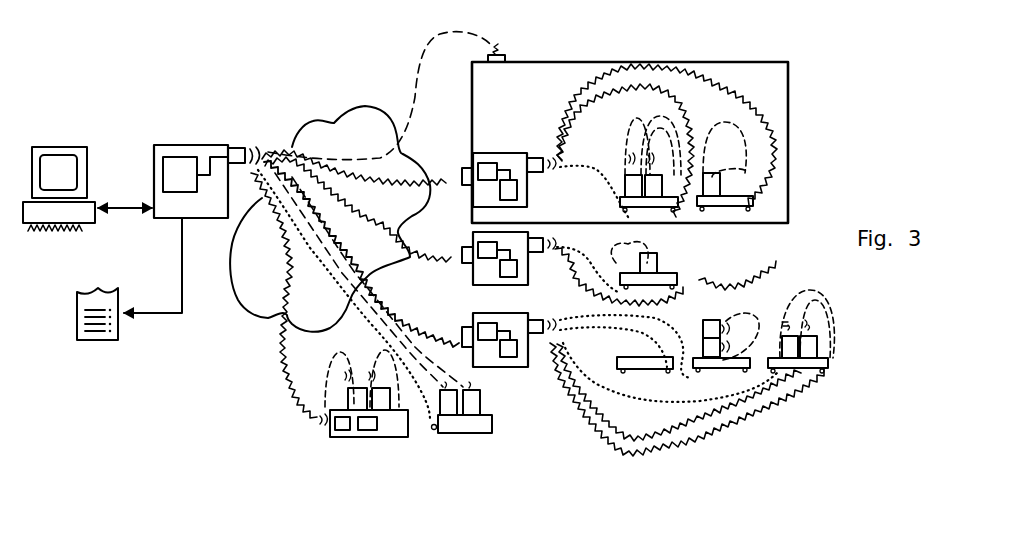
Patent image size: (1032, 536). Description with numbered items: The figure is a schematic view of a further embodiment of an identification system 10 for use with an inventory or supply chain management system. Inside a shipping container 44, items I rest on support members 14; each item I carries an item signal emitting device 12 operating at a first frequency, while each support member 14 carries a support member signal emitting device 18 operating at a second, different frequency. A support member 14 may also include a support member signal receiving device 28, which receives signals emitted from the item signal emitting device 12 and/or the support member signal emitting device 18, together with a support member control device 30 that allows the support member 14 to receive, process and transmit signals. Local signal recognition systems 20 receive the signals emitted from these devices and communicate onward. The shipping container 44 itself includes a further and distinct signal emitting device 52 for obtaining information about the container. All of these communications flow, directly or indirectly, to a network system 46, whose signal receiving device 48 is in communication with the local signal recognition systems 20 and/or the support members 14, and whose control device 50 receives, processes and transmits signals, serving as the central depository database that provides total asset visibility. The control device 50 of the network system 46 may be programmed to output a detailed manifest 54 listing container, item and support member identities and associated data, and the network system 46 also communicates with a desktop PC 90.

The identification system 10 is at (222, 373).
The item signal emitting device 12 is at (712, 176).
The item I is at (722, 186).
The support member 14 is at (733, 206).
The support member signal emitting device 18 is at (878, 344).
The local signal recognition system 20 is at (502, 148).
The support member signal receiving device 28 is at (370, 438).
The support member control device 30 is at (345, 417).
The shipping container 44 is at (557, 62).
The network system 46 is at (201, 183).
The signal receiving device 48 is at (240, 144).
The control device 50 is at (172, 150).
The signal emitting device 52 is at (507, 58).
The manifest 54 is at (100, 341).
The desktop PC 90 is at (60, 145).